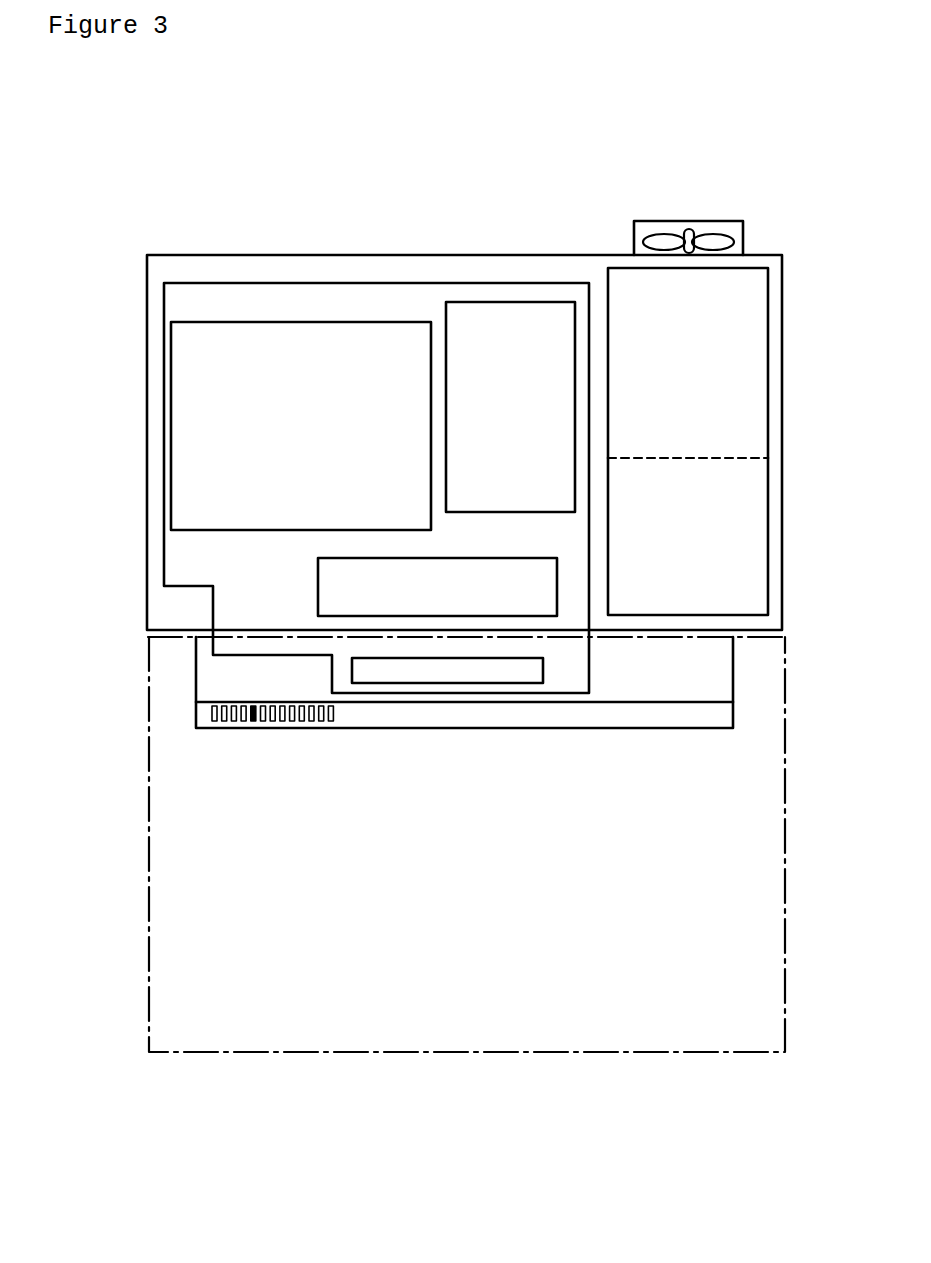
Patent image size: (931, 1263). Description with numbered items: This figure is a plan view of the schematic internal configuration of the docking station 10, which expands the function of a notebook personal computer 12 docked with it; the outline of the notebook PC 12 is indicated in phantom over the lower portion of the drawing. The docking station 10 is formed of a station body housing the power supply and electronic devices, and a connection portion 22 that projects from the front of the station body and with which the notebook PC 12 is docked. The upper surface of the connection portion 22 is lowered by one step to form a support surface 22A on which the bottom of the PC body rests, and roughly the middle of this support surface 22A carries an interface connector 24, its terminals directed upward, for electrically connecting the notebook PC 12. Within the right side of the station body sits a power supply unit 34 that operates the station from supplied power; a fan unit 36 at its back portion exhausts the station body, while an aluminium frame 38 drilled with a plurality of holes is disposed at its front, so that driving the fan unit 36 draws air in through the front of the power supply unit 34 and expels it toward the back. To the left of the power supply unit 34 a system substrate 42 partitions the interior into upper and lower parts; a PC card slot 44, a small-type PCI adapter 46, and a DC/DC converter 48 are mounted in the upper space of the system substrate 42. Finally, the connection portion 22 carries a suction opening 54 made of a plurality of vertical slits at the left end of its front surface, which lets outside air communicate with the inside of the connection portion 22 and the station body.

The docking station 10 is at (196, 218).
The notebook personal computer 12 is at (425, 1055).
The connection portion 22 is at (448, 728).
The support surface 22A is at (228, 682).
The interface connector 24 is at (544, 675).
The power supply unit 34 is at (733, 428).
The fan unit 36 is at (722, 232).
The frame 38 is at (698, 574).
The system substrate 42 is at (182, 563).
The PC card slot 44 is at (524, 330).
The PCI adapter 46 is at (285, 353).
The DC/DC converter 48 is at (348, 588).
The suction opening 54 is at (262, 730).